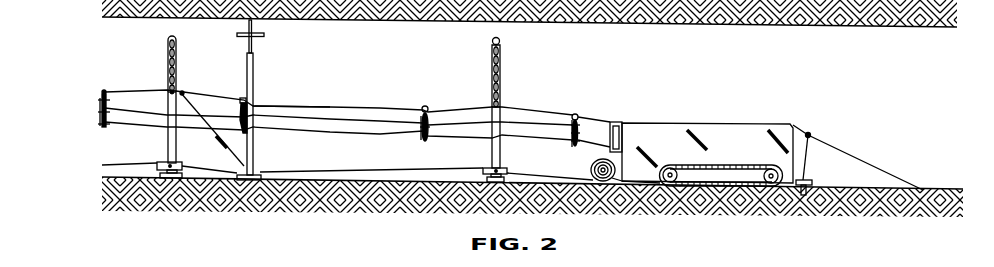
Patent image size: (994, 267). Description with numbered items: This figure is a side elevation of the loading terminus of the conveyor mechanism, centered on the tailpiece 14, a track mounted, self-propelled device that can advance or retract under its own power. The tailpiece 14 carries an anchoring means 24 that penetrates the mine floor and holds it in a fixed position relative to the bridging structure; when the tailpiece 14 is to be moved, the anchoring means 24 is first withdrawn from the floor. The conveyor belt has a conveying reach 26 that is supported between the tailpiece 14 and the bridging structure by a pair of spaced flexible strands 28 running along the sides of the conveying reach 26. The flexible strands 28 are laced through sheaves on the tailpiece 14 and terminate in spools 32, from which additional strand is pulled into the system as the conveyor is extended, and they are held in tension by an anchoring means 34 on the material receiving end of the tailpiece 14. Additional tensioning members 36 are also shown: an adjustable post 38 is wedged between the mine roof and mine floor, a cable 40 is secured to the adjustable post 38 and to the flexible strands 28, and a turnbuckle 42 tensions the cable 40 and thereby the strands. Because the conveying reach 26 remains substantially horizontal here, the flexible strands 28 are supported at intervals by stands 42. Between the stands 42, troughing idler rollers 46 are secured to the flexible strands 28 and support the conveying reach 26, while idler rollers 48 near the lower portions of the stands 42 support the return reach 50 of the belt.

The tailpiece 14 is at (733, 117).
The anchoring means 24 is at (806, 180).
The conveying reach 26 is at (338, 120).
The flexible strands 28 is at (287, 106).
The spools 32 is at (592, 166).
The anchoring means 34 is at (842, 149).
The tensioning members 36 is at (207, 88).
The adjustable post 38 is at (253, 73).
The cable 40 is at (208, 130).
The stands 42 is at (166, 60).
The troughing idler rollers 46 is at (103, 90).
The idler rollers 48 is at (165, 162).
The return reach 50 is at (319, 170).